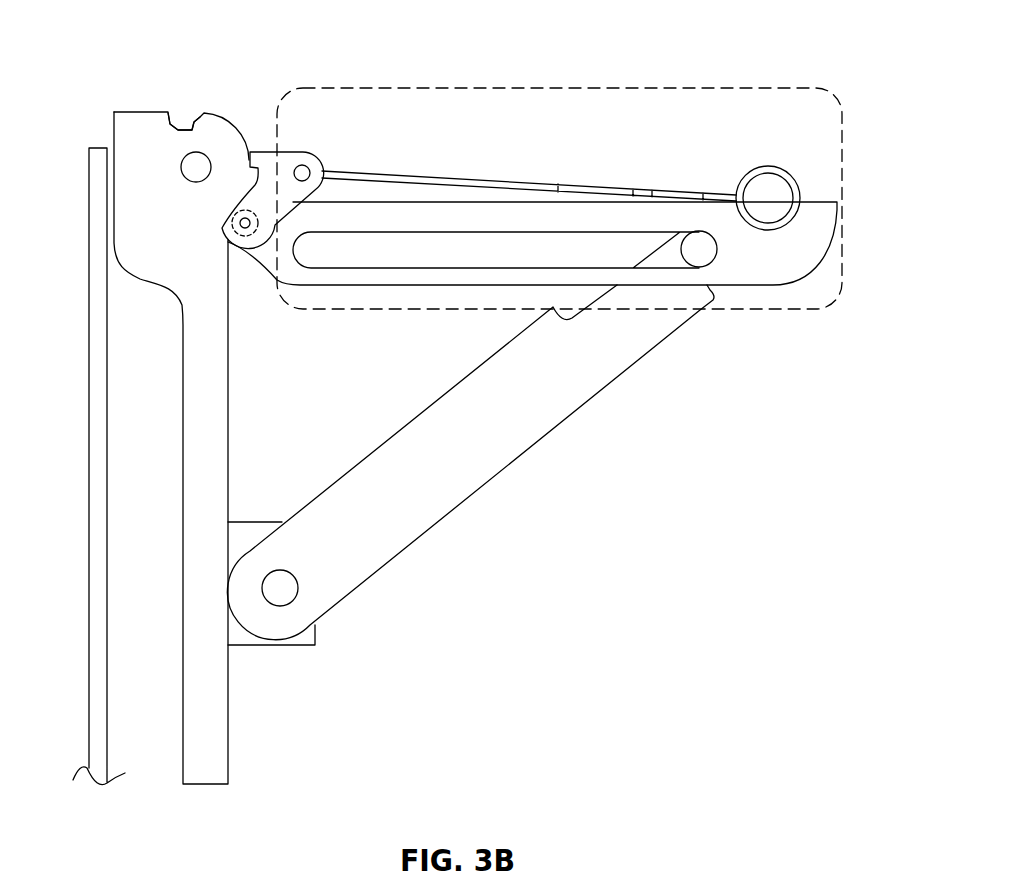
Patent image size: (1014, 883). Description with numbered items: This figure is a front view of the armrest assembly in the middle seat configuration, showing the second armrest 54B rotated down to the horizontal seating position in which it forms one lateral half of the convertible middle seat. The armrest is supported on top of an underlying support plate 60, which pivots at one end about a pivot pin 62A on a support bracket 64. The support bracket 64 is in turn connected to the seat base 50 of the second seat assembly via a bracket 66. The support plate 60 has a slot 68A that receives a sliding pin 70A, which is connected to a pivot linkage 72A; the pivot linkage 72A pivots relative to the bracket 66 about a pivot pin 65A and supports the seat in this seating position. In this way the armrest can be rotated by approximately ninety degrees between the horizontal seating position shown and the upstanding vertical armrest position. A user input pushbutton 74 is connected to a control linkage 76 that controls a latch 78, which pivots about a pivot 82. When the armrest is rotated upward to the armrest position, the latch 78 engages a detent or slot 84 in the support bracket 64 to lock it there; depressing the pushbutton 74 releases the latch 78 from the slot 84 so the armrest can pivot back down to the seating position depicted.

The seat base 50 is at (88, 483).
The second armrest 54B is at (562, 88).
The support plate 60 is at (822, 202).
The pivot pin 62A is at (196, 167).
The support bracket 64 is at (135, 133).
The pivot pin 65A is at (282, 588).
The bracket 66 is at (318, 640).
The slot 68A is at (532, 232).
The sliding pin 70A is at (705, 252).
The pivot linkage 72A is at (492, 433).
The user input pushbutton 74 is at (772, 190).
The control linkage 76 is at (417, 182).
The latch 78 is at (290, 152).
The pivot 82 is at (245, 223).
The slot 84 is at (190, 117).